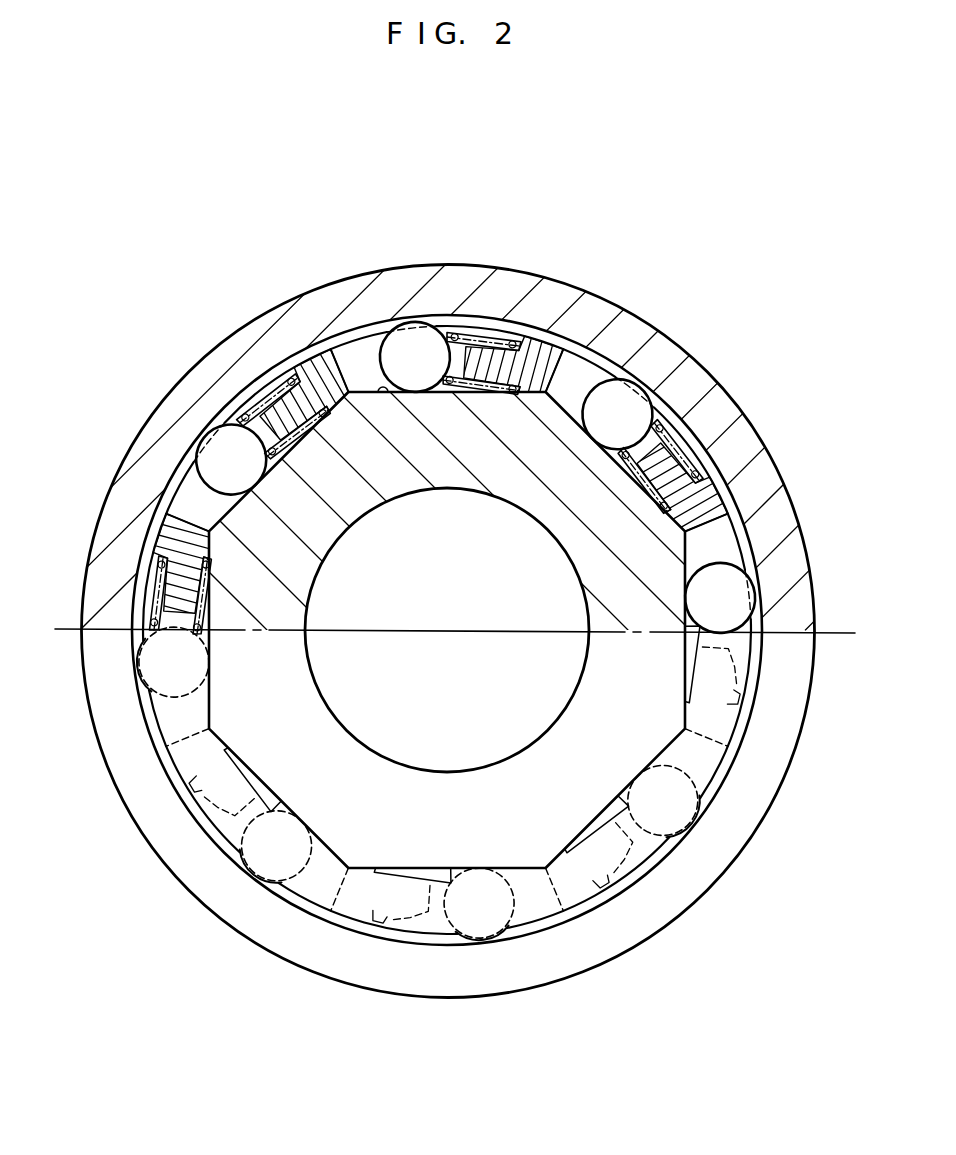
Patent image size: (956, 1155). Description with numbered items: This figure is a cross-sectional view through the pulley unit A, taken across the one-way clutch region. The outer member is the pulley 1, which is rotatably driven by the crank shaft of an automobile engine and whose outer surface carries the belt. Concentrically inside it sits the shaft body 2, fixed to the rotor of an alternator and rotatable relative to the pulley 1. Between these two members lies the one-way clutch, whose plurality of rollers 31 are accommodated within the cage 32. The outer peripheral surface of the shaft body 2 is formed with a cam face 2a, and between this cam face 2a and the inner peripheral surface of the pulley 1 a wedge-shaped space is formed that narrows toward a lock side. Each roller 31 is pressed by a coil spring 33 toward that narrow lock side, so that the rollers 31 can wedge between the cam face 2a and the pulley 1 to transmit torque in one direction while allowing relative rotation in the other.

The pulley 1 is at (682, 368).
The shaft body 2 is at (547, 505).
The cam face 2a is at (386, 394).
The roller 31 is at (417, 323).
The cage 32 is at (588, 370).
The coil spring 33 is at (468, 336).
The pulley unit A is at (778, 372).